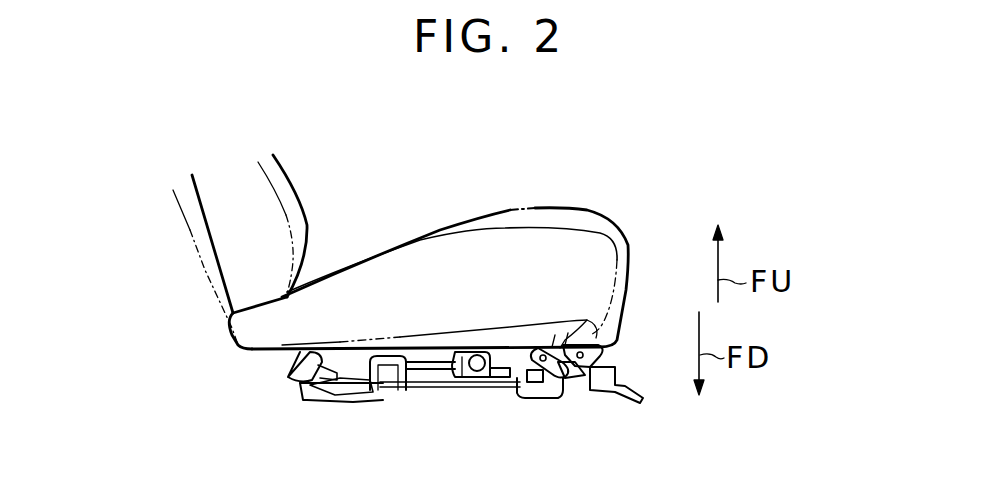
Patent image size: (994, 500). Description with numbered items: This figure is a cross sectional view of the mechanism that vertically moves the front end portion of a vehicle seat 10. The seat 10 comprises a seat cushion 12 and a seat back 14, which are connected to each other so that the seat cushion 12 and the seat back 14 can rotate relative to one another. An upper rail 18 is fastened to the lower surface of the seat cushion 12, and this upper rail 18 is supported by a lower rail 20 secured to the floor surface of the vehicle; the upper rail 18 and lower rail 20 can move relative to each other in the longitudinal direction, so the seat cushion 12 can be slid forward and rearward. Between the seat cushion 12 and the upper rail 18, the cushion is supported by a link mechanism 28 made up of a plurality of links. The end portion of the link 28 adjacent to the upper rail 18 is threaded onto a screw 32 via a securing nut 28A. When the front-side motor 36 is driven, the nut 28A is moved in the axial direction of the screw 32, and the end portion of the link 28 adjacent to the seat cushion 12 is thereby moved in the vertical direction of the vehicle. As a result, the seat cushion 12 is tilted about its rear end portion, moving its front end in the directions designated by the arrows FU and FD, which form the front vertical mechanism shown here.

The seat 10 is at (656, 178).
The seat cushion 12 is at (480, 232).
The seat back 14 is at (303, 205).
The upper rail 18 is at (600, 362).
The lower rail 20 is at (602, 392).
The link mechanism 28 is at (561, 347).
The securing nut 28A is at (533, 395).
The screw 32 is at (520, 395).
The motor 36 is at (470, 385).